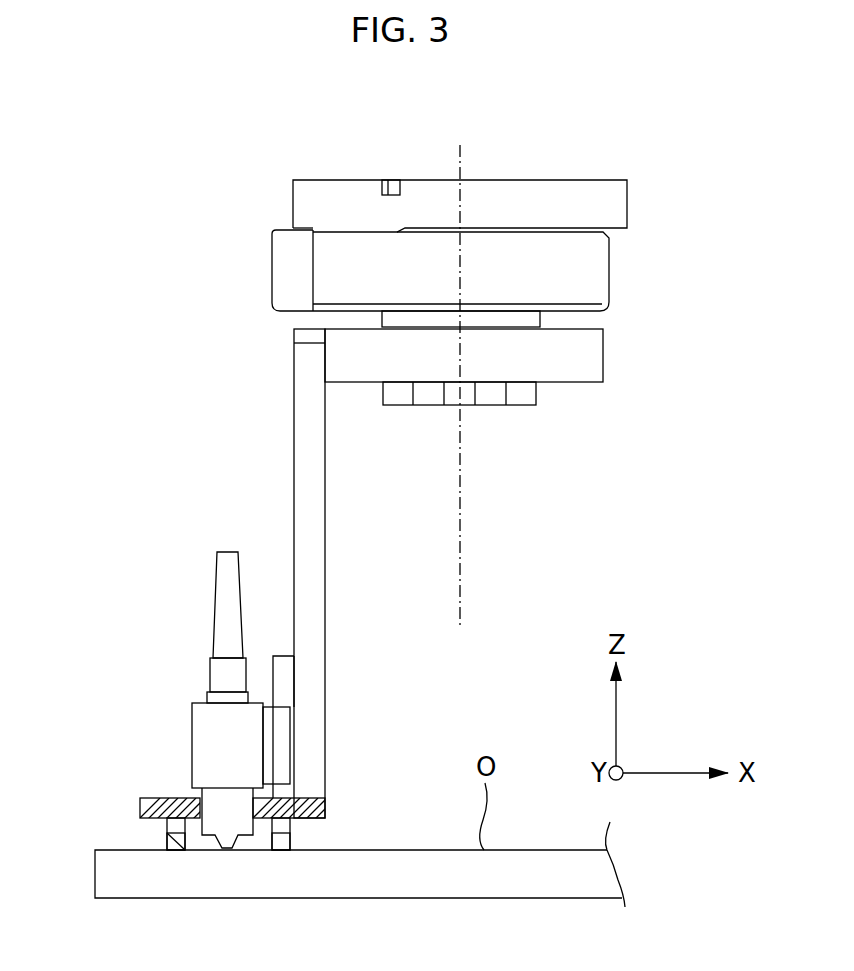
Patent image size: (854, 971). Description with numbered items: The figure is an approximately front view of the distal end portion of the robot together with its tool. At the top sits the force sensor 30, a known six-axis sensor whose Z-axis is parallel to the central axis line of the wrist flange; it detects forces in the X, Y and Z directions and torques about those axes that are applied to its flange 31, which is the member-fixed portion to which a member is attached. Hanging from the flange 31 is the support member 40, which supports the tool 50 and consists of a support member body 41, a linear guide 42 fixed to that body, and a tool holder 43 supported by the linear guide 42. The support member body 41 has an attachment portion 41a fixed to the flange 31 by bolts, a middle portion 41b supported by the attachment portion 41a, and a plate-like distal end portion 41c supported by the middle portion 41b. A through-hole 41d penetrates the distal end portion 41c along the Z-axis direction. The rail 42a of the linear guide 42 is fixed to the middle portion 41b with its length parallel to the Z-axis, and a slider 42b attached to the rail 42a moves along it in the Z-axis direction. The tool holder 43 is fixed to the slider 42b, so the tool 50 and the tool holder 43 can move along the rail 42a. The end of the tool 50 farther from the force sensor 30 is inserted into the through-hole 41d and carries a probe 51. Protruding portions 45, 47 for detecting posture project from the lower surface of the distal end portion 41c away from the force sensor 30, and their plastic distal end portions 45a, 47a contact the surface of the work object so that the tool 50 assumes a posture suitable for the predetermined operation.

The force sensor 30 is at (609, 268).
The flange 31 is at (540, 317).
The support member 40 is at (288, 432).
The support member body 41 is at (332, 645).
The attachment portion 41a is at (603, 355).
The middle portion 41b is at (325, 563).
The distal end portion 41c is at (282, 806).
The through-hole 41d is at (200, 806).
The linear guide 42 is at (300, 717).
The rail 42a is at (273, 660).
The slider 42b is at (280, 745).
The tool holder 43 is at (192, 740).
The protruding portion 45 is at (290, 826).
The distal end portion of protruding portion 45a is at (290, 845).
The protruding portion 47 is at (165, 824).
The distal end portion of protruding portion 47a is at (167, 845).
The tool 50 is at (213, 608).
The probe 51 is at (236, 848).